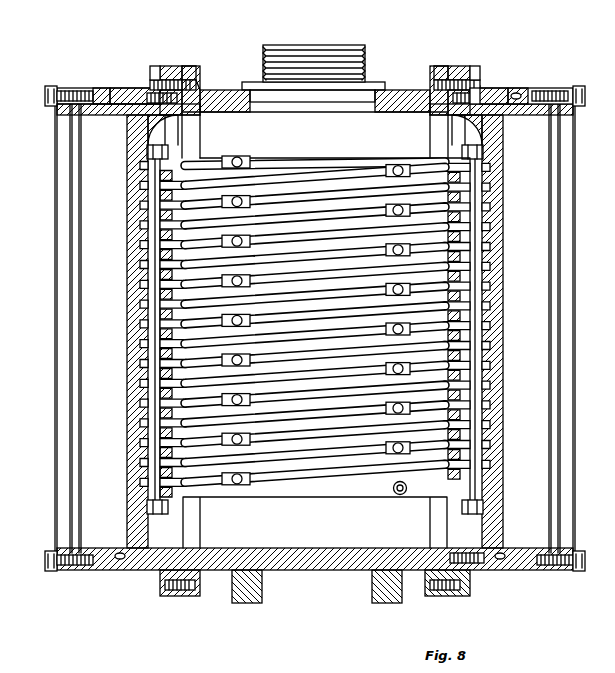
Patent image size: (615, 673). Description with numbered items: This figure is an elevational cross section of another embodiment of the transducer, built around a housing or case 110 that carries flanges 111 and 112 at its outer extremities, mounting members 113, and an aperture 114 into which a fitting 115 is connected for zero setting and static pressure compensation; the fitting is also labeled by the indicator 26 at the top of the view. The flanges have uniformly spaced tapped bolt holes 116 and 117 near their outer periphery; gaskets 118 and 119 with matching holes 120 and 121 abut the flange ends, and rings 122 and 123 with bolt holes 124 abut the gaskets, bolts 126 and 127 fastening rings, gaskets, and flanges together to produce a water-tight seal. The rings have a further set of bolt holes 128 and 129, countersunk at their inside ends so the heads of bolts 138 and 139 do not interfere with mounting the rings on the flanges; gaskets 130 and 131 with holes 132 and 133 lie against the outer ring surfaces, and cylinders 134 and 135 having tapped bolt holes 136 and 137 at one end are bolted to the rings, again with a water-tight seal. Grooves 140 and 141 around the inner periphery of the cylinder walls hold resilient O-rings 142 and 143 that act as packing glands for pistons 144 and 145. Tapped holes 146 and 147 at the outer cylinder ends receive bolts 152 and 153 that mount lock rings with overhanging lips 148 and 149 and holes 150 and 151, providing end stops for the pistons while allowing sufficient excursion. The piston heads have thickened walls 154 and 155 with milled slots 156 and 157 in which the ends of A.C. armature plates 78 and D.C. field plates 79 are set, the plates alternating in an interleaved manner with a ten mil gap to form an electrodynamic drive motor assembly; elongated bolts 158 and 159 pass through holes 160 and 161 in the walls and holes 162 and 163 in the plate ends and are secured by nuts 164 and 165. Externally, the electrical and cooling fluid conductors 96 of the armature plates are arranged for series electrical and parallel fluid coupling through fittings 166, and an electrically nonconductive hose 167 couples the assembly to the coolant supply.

The threaded inlet nozzle 26 is at (341, 39).
The A.C. armature plates 78 is at (138, 288).
The D.C. field plates 79 is at (496, 214).
The electrical and cooling fluid conductors 96 is at (210, 164).
The housing or case 110 is at (392, 106).
The flange 111 is at (200, 92).
The flange 112 is at (430, 86).
The mounting members 113 is at (246, 600).
The aperture 114 is at (246, 106).
The fitting 115 is at (365, 66).
The bolt holes 116 is at (198, 78).
The bolt holes 117 is at (440, 72).
The gasket 118 is at (176, 66).
The gasket 119 is at (457, 66).
The holes 120 is at (190, 66).
The holes 121 is at (452, 68).
The ring 122 is at (172, 80).
The ring 123 is at (460, 80).
The bolt holes 124 is at (160, 70).
The bolts 126 is at (160, 90).
The bolts 127 is at (480, 72).
The bolt holes 128 is at (160, 118).
The bolt holes 129 is at (461, 110).
The gasket 130 is at (152, 570).
The gasket 131 is at (468, 590).
The holes 132 is at (160, 588).
The holes 133 is at (468, 566).
The cylinder 134 is at (114, 92).
The cylinder 135 is at (560, 88).
The tapped bolt holes 136 is at (150, 88).
The tapped bolt holes 137 is at (481, 110).
The bolts 138 is at (171, 116).
The bolts 139 is at (438, 112).
The groove 140 is at (112, 95).
The groove 141 is at (516, 92).
The O-ring 142 is at (117, 114).
The O-ring 143 is at (508, 114).
The piston 144 is at (128, 160).
The piston 145 is at (498, 166).
The tapped holes 146 is at (84, 94).
The tapped holes 147 is at (550, 92).
The overhanging lip 148 is at (68, 118).
The overhanging lip 149 is at (568, 122).
The holes 150 is at (57, 105).
The holes 151 is at (562, 110).
The bolts 152 is at (46, 90).
The bolts 153 is at (585, 92).
The thickened wall 154 is at (146, 196).
The thickened wall 155 is at (476, 264).
The milled slots 156 is at (142, 246).
The milled slots 157 is at (490, 320).
The elongated bolts 158 is at (150, 346).
The elongated bolts 159 is at (494, 382).
The holes 160 is at (150, 376).
The holes 161 is at (492, 446).
The holes 162 is at (150, 462).
The holes 163 is at (485, 496).
The nuts 164 is at (160, 512).
The nuts 165 is at (472, 512).
The fittings 166 is at (398, 164).
The electrically nonconductive hose 167 is at (400, 495).